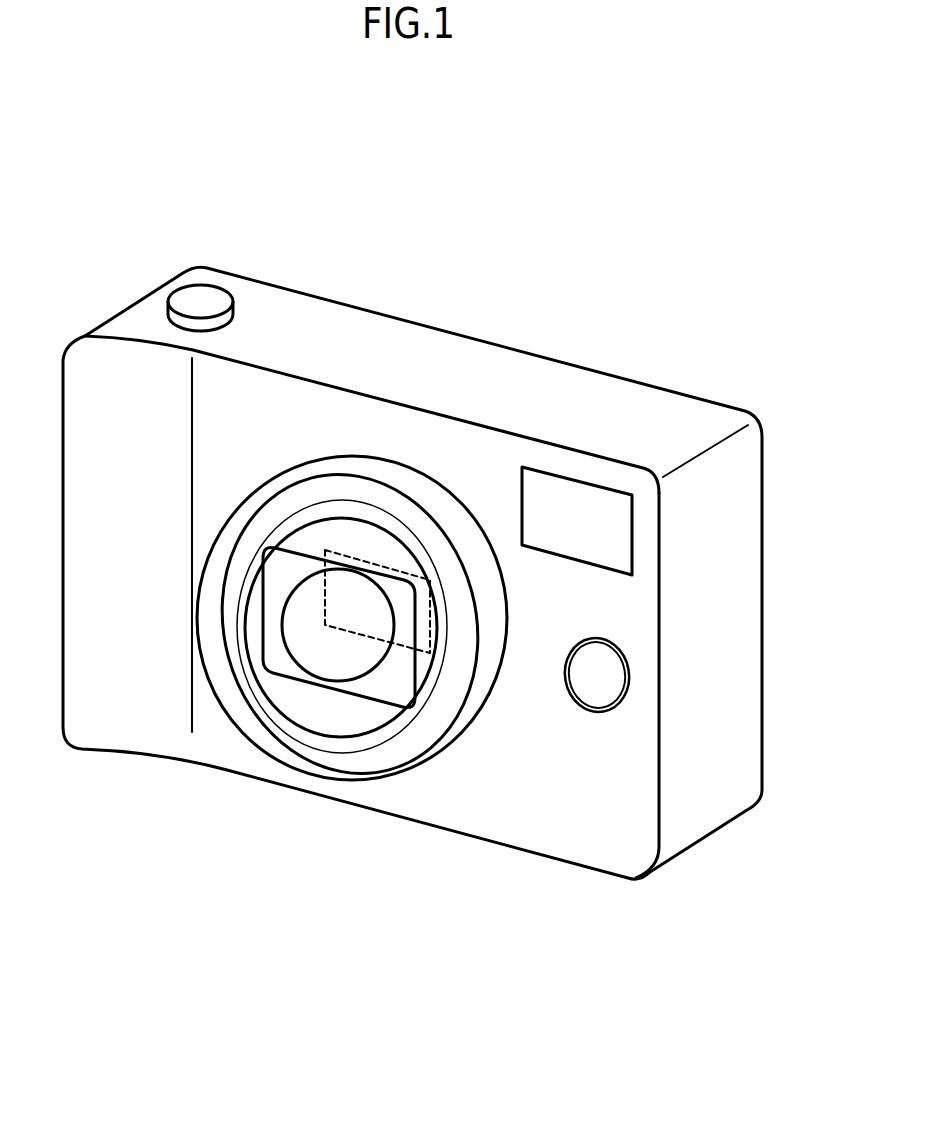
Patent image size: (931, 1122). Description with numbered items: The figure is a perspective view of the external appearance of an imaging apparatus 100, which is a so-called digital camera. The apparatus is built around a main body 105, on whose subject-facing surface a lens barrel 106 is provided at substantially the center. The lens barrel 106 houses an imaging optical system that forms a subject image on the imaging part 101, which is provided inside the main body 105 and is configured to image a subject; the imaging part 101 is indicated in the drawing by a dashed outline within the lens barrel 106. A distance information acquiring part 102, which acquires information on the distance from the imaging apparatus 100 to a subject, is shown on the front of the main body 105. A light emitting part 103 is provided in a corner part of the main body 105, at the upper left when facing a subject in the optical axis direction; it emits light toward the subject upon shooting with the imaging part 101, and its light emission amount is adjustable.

The imaging apparatus 100 is at (295, 212).
The imaging part 101 is at (363, 613).
The distance information acquiring part 102 is at (597, 688).
The light emitting part 103 is at (588, 502).
The main body 105 is at (398, 345).
The lens barrel 106 is at (367, 765).